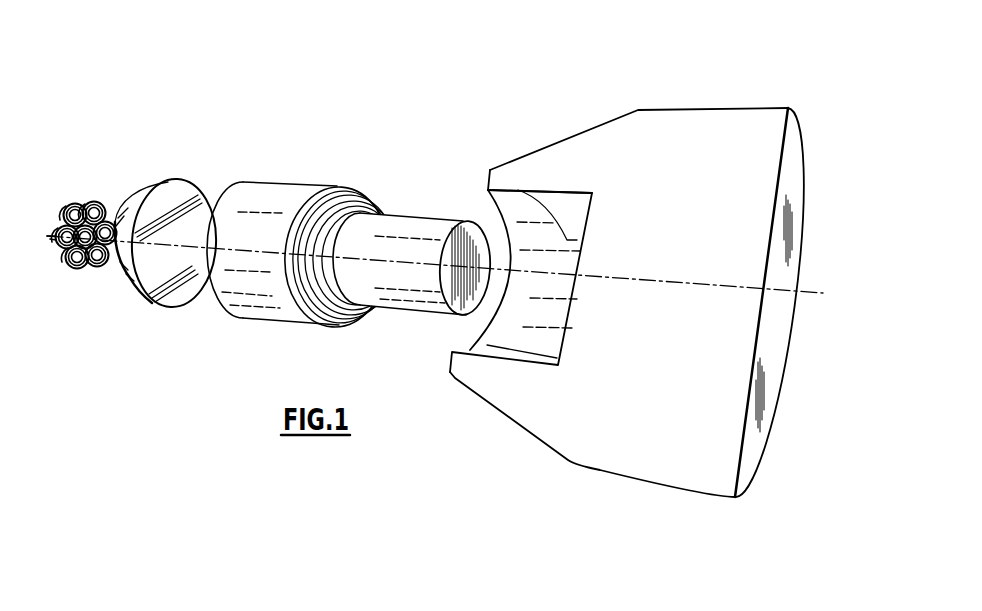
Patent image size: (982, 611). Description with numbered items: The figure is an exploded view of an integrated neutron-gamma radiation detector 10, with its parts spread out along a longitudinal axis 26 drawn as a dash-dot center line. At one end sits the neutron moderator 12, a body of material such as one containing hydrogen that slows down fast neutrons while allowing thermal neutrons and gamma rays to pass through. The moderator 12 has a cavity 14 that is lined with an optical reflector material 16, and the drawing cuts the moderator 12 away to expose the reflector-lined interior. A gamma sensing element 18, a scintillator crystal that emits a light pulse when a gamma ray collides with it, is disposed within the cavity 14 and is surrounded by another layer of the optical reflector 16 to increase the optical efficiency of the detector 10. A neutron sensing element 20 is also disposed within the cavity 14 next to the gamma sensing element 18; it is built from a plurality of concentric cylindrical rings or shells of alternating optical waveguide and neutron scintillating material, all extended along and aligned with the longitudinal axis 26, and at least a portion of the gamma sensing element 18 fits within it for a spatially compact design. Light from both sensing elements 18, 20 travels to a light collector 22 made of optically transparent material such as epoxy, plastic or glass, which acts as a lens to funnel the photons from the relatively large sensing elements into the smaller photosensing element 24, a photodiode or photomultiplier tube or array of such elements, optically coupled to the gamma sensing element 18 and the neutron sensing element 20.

The integrated neutron-gamma radiation detector 10 is at (742, 85).
The neutron moderator 12 is at (653, 113).
The cavity 14 is at (514, 333).
The optical reflector material 16 is at (537, 215).
The gamma sensing element 18 is at (427, 210).
The neutron sensing element 20 is at (288, 176).
The light collector 22 is at (165, 186).
The photosensing element 24 is at (80, 196).
The longitudinal axis 26 is at (813, 290).